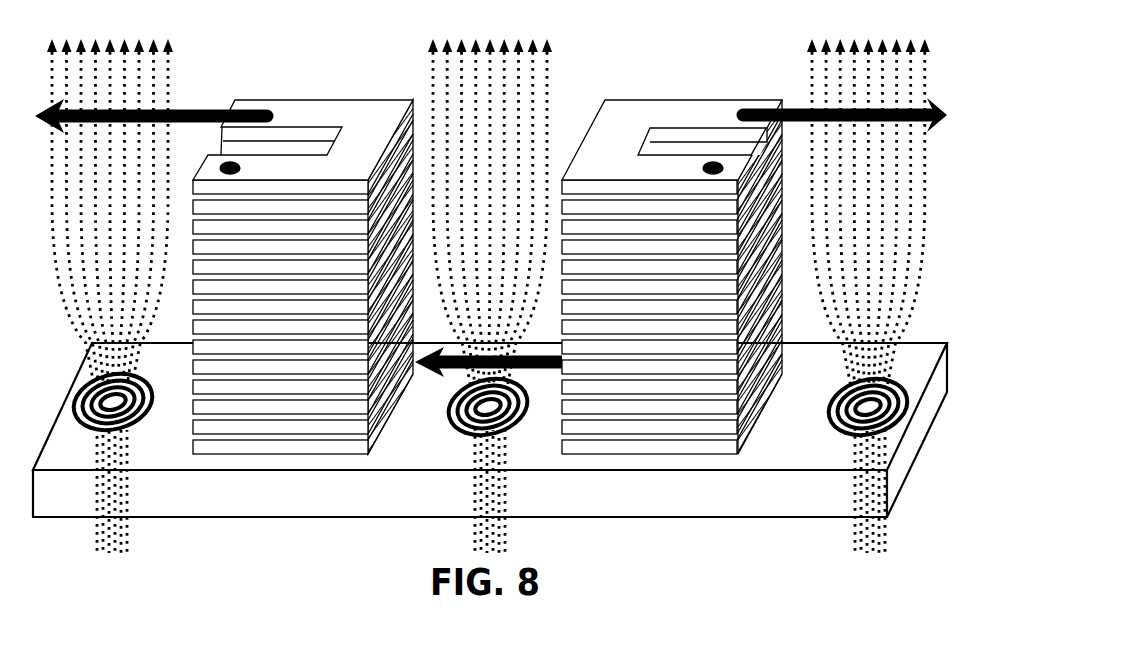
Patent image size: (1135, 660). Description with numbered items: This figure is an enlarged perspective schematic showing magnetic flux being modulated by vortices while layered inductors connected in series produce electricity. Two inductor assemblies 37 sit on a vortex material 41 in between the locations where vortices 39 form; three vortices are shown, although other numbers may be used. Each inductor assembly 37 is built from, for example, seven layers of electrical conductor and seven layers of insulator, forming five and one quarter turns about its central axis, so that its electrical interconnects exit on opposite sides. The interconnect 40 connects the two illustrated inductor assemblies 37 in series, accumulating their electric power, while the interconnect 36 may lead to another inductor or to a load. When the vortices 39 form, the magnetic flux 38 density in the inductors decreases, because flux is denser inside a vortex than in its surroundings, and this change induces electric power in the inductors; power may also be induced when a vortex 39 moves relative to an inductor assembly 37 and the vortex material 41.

The electrical interconnect 36 is at (195, 108).
The inductor assembly 37 is at (367, 122).
The magnetic flux 38 is at (545, 120).
The vortex 39 is at (143, 415).
The interconnect 40 is at (427, 378).
The vortex material 41 is at (580, 497).